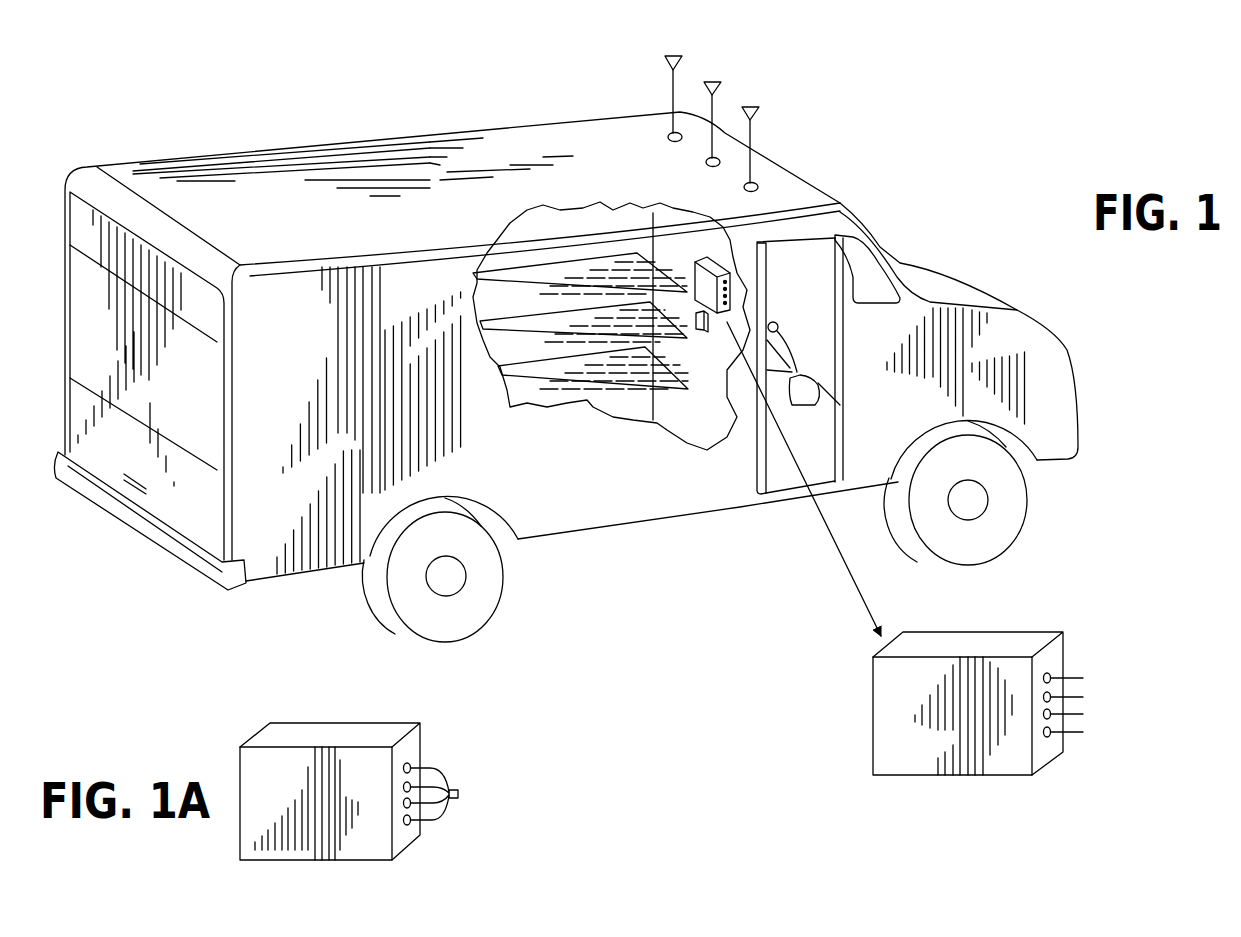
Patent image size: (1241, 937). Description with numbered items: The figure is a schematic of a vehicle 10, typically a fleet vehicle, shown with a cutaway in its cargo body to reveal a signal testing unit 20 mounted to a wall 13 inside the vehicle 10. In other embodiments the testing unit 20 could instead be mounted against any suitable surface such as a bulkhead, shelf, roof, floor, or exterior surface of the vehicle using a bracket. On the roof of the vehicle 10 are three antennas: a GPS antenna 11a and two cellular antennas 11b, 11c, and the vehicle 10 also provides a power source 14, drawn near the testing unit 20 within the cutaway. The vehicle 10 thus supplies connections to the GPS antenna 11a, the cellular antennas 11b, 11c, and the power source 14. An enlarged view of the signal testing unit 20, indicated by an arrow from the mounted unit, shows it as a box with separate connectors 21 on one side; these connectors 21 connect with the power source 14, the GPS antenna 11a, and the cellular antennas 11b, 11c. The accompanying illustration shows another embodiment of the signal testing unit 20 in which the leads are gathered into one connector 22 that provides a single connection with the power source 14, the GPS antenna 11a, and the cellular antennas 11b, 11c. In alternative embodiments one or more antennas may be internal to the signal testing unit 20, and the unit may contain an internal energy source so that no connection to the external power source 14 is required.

In FIG. 1, the vehicle 10 is at (413, 134).
In FIG. 1, the GPS antenna 11a is at (680, 64).
In FIG. 1, the cellular antenna 11b is at (720, 89).
In FIG. 1, the cellular antenna 11c is at (758, 116).
In FIG. 1, the wall 13 is at (752, 281).
In FIG. 1, the power source 14 is at (691, 333).
In FIG. 1, the signal testing unit 20 is at (750, 283).
In FIG. 1A, the signal testing unit 20 is at (395, 700).
In FIG. 1, the connectors 21 is at (1081, 666).
In FIG. 1A, the connector 22 is at (459, 776).